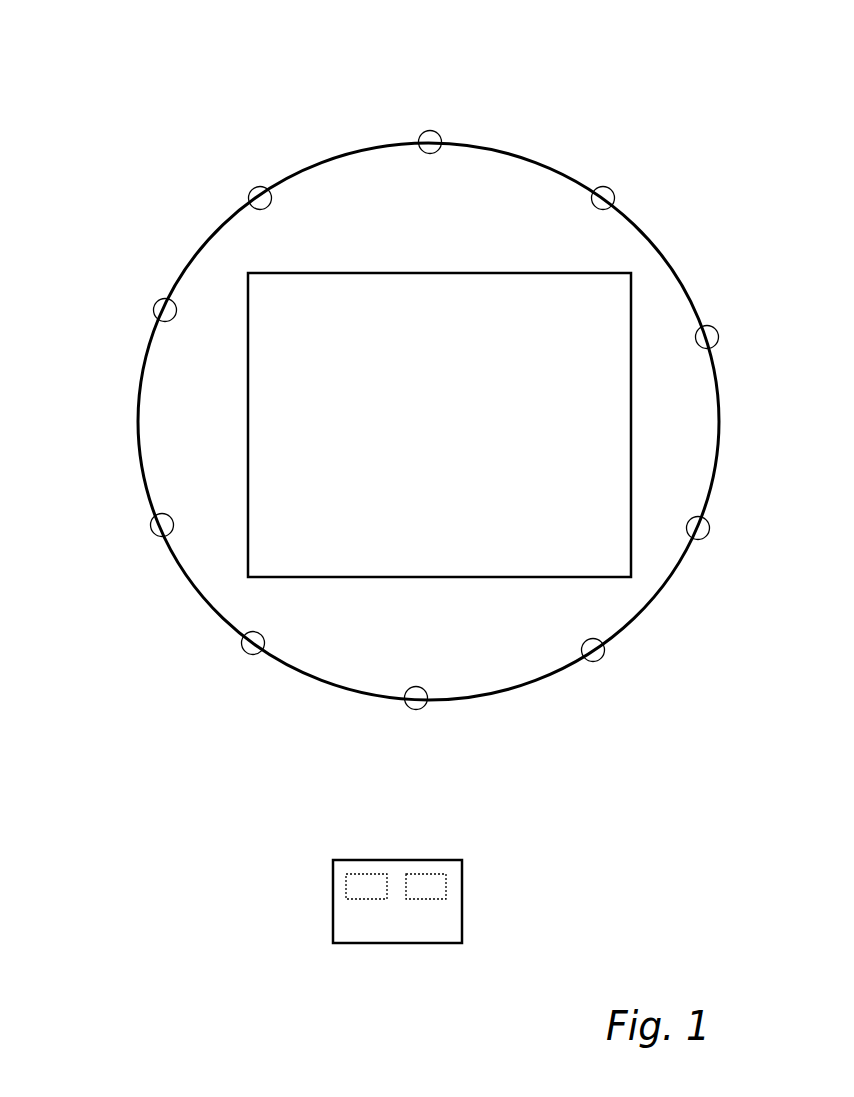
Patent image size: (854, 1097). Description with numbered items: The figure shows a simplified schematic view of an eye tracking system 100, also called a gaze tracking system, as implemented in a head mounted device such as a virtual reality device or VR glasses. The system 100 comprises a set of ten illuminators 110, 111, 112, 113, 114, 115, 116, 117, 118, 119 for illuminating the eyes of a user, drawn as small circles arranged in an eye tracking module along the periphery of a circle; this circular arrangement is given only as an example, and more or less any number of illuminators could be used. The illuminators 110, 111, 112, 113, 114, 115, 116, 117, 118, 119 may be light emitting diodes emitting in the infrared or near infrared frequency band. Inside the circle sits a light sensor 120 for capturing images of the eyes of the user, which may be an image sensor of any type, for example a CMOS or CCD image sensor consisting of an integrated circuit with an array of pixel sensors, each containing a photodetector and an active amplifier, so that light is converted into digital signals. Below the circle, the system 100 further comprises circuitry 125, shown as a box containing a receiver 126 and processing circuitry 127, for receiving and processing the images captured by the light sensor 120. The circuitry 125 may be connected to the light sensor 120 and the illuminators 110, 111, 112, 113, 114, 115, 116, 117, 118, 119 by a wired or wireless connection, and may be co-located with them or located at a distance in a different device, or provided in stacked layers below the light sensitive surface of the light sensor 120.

The eye tracking system 100 is at (100, 712).
The illuminator 110 is at (163, 300).
The illuminator 111 is at (257, 187).
The illuminator 112 is at (428, 131).
The illuminator 113 is at (608, 187).
The illuminator 114 is at (712, 326).
The illuminator 115 is at (700, 540).
The illuminator 116 is at (598, 663).
The illuminator 117 is at (412, 710).
The illuminator 118 is at (252, 657).
The illuminator 119 is at (158, 537).
The light sensor 120 is at (447, 272).
The circuitry 125 is at (383, 930).
The receiver 126 is at (353, 872).
The processing circuitry 127 is at (433, 872).